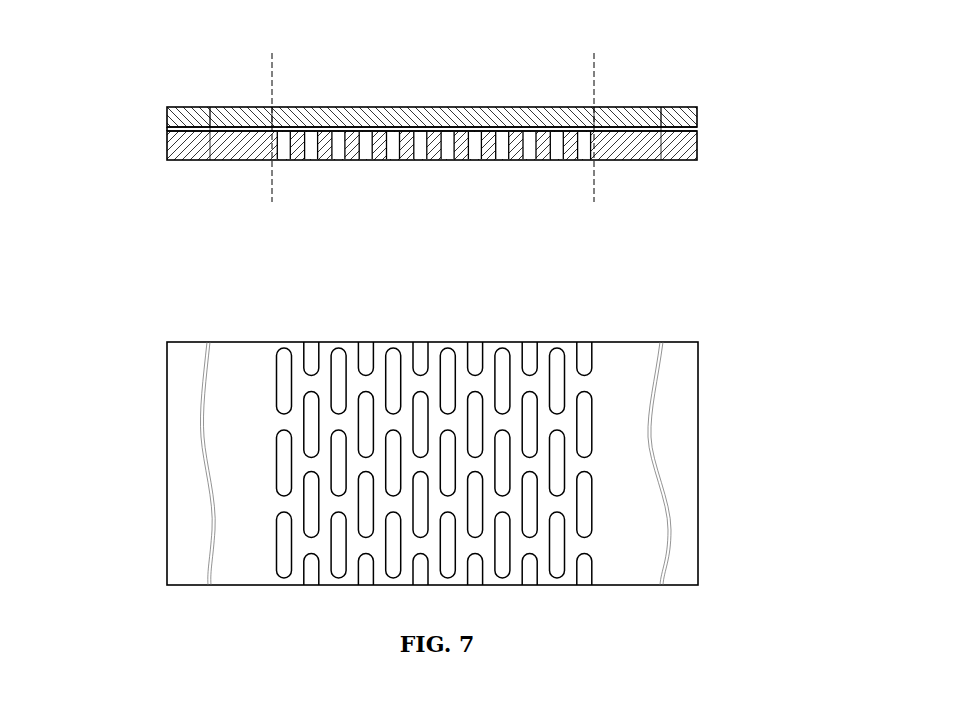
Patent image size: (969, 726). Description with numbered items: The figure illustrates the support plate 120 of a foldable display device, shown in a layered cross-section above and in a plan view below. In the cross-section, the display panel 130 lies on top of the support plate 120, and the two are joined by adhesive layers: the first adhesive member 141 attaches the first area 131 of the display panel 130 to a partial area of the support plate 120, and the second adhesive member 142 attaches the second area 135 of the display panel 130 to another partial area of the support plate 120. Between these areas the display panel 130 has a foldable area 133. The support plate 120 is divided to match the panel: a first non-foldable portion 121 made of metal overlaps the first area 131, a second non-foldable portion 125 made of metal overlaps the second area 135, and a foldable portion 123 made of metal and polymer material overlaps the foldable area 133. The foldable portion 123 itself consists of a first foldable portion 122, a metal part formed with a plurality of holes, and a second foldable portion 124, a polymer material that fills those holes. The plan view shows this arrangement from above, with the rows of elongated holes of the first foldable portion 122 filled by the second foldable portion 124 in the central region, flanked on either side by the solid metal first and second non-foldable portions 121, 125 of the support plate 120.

The support plate 120 is at (698, 148).
The first non-foldable portion 121 is at (234, 162).
The first foldable portion 122 is at (462, 160).
The foldable portion 123 is at (385, 214).
The second foldable portion 124 is at (393, 160).
The second non-foldable portion 125 is at (673, 162).
The display panel 130 is at (698, 109).
The first area 131 is at (234, 107).
The foldable area 133 is at (433, 107).
The second area 135 is at (640, 107).
The first adhesive member 141 is at (167, 127).
The second adhesive member 142 is at (698, 129).